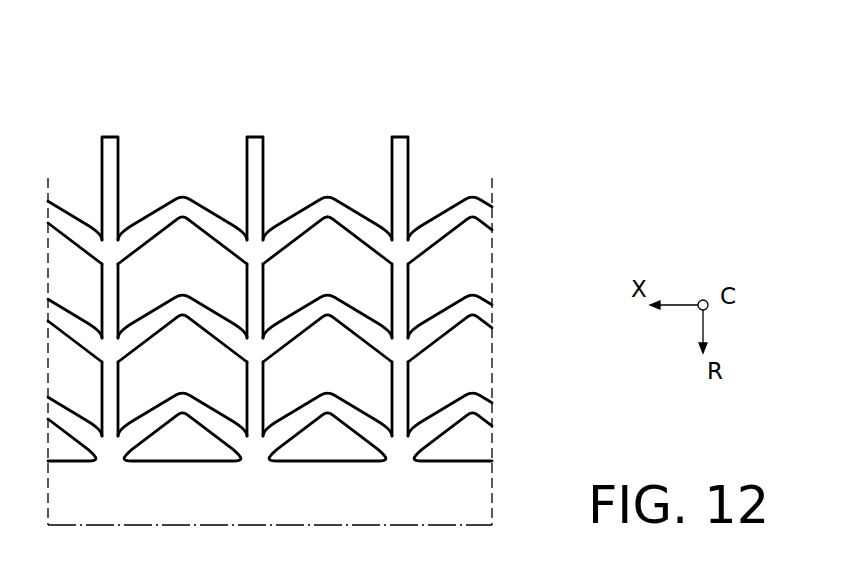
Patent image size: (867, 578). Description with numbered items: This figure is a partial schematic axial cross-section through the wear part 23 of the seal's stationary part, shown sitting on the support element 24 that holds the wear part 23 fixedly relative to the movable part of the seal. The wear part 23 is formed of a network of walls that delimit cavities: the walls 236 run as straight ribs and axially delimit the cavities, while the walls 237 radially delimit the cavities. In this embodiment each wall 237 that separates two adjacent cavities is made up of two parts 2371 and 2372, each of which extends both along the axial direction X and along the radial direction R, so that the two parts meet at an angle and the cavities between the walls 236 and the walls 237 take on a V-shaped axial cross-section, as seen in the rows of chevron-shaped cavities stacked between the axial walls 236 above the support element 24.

The wear part 23 is at (598, 215).
The support element 24 is at (332, 488).
The wall axially delimiting the cavities 236 is at (390, 308).
The wall radially delimiting the cavities 237 is at (435, 75).
The first part of the wall 2371 is at (294, 215).
The second part of the wall 2372 is at (362, 216).